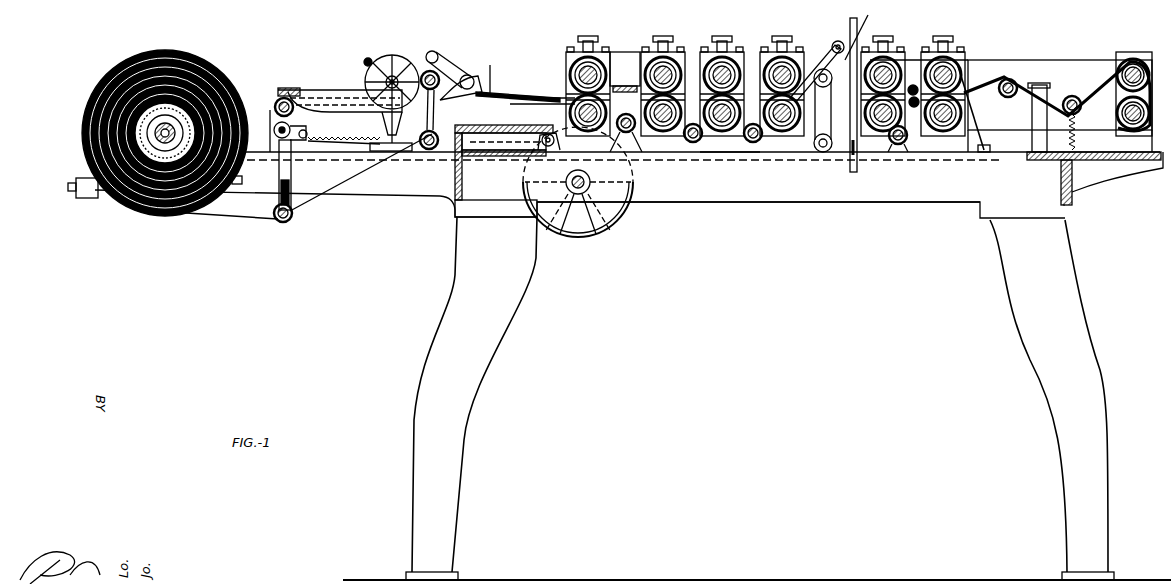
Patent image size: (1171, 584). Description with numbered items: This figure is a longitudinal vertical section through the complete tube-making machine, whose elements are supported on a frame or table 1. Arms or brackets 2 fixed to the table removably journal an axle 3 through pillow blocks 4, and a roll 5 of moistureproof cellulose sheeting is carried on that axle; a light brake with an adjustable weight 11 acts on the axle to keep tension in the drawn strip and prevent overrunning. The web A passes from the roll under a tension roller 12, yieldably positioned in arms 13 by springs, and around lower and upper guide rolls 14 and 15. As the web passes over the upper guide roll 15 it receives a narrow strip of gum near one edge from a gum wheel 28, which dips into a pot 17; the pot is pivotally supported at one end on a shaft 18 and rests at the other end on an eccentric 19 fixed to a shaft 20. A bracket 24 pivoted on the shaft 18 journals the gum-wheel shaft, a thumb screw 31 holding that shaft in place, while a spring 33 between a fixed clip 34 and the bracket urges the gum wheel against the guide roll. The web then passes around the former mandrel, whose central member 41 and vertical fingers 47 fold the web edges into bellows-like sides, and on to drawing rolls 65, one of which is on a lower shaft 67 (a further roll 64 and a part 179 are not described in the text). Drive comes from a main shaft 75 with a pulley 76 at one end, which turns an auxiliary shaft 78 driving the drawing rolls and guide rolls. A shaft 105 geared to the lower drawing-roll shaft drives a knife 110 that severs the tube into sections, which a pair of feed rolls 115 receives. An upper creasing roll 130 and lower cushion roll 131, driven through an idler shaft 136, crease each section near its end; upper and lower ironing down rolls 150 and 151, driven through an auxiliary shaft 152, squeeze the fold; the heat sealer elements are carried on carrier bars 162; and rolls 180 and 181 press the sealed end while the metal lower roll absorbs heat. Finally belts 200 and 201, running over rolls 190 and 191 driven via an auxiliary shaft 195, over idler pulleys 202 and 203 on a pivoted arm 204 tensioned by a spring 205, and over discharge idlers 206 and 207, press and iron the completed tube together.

The frame or table 1 is at (427, 348).
The arms or brackets 2 is at (382, 188).
The axle 3 is at (150, 125).
The pillow blocks 4 is at (138, 133).
The roll of moistureproof cellulose sheeting 5 is at (160, 52).
The adjustable weight 11 is at (88, 196).
The tension roller 12 is at (294, 216).
The arms 13 is at (279, 170).
The lower guide roll 14 is at (430, 150).
The upper guide roll 15 is at (436, 88).
The pot 17 is at (300, 89).
The shaft 18 is at (398, 128).
The eccentric 19 is at (275, 108).
The shaft 20 is at (274, 128).
The bracket 24 is at (400, 76).
The gum wheel 28 is at (396, 58).
The thumb screw 31 is at (364, 64).
The spring 33 is at (345, 138).
The fixed clip 34 is at (306, 132).
The central member 41 is at (462, 98).
The vertical fingers 47 is at (518, 82).
The upper roll 64 is at (572, 72).
The drawing rolls 65 is at (548, 96).
The lower shaft 67 is at (570, 115).
The main shaft 75 is at (578, 195).
The pulley 76 is at (615, 220).
The auxiliary shaft 78 is at (548, 147).
The shaft 105 is at (630, 134).
The knife 110 is at (648, 78).
The feed rolls 115 is at (674, 62).
The upper creasing roll 130 is at (728, 58).
The lower cushion roll 131 is at (730, 134).
The idler shaft 136 is at (696, 143).
The upper ironing down roll 150 is at (812, 70).
The lower ironing down roll 151 is at (816, 110).
The auxiliary shaft 152 is at (756, 143).
The carrier bars 162 is at (857, 38).
The stop pin 179 is at (912, 84).
The upper roll 180 is at (892, 58).
The lower roll 181 is at (878, 132).
The roll 190 is at (955, 58).
The roll 191 is at (980, 152).
The auxiliary shaft 195 is at (902, 145).
The belt 200 is at (1078, 62).
The belt 201 is at (1030, 128).
The idler pulley 202 is at (1008, 98).
The idler pulley 203 is at (1080, 100).
The pivoted arm 204 is at (1050, 94).
The spring 205 is at (1076, 146).
The idler 206 is at (1140, 60).
The idler 207 is at (1136, 128).
The web A is at (226, 214).